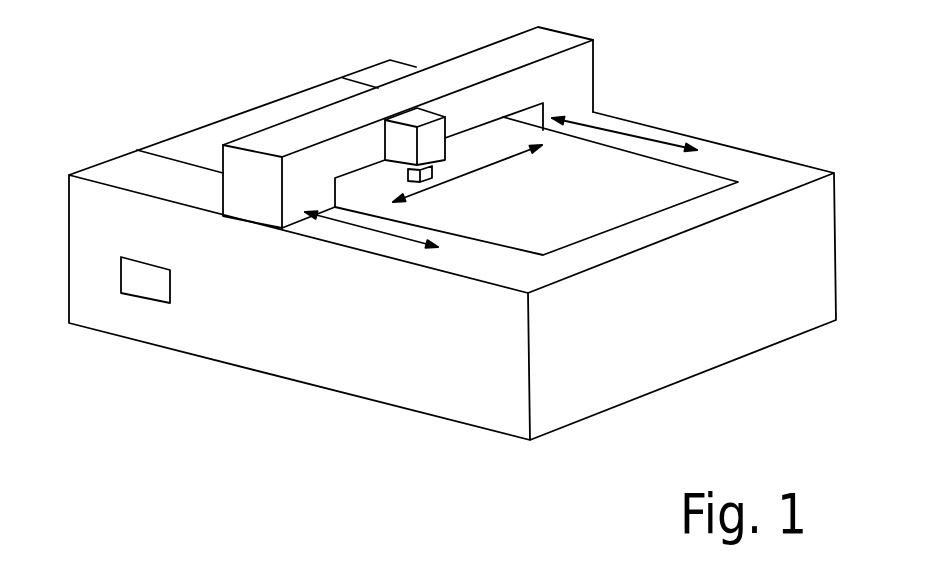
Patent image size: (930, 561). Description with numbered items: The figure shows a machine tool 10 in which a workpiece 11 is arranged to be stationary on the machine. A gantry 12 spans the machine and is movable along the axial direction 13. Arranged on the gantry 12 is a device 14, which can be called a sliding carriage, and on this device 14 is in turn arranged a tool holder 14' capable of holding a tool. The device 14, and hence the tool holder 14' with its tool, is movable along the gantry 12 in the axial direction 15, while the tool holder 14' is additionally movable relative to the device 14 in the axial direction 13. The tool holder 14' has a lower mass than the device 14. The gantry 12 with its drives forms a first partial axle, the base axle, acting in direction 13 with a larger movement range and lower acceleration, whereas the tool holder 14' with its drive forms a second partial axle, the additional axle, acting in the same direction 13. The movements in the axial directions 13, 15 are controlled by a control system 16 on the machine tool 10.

The machine tool 10 is at (282, 354).
The workpiece 11 is at (537, 223).
The gantry 12 is at (275, 138).
The axial direction 13 is at (400, 237).
The device 14 is at (419, 89).
The tool holder 14' is at (356, 220).
The axial direction 15 is at (462, 168).
The control system 16 is at (138, 298).